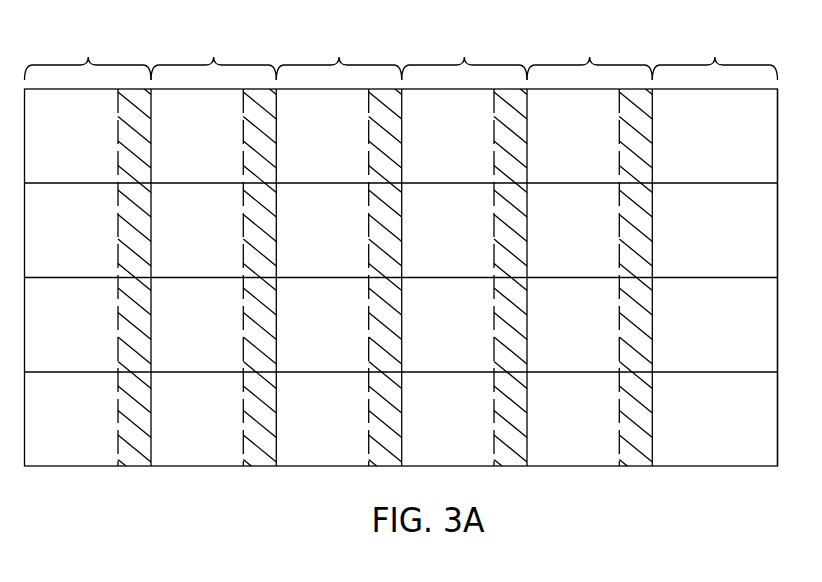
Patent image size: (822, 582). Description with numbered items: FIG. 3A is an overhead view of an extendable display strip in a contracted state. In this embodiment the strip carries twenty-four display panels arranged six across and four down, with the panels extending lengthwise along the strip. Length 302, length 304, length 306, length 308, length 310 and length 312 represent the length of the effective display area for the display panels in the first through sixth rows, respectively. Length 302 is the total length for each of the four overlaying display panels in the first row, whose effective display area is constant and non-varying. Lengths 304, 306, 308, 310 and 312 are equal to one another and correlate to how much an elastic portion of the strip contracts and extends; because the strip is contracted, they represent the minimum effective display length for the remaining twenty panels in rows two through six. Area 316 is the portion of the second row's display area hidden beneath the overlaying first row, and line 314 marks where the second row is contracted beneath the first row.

The length 302 is at (88, 57).
The length 304 is at (214, 57).
The length 306 is at (339, 57).
The length 308 is at (464, 57).
The length 310 is at (590, 57).
The length 312 is at (715, 57).
The line 314 is at (118, 473).
The area 316 is at (135, 442).